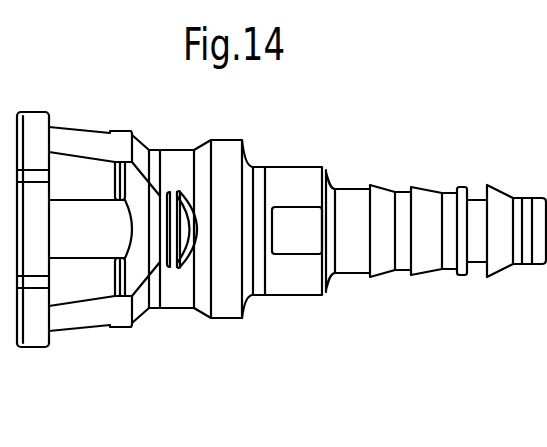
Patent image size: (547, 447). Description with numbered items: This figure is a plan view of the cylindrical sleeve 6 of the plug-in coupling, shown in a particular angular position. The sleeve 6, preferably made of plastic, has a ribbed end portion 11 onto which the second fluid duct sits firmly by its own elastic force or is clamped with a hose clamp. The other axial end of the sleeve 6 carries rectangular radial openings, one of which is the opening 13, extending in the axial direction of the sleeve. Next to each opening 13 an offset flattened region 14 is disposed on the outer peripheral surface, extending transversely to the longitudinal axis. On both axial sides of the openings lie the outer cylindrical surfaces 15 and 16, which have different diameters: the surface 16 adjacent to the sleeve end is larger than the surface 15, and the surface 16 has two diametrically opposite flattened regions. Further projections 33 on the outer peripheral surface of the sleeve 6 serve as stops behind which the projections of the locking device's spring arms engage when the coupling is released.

The cylindrical sleeve 6 is at (293, 168).
The ribbed end portion 11 is at (443, 202).
The radial opening 13 is at (77, 250).
The offset flattened region 14 is at (73, 163).
The outer cylindrical surface 15 is at (225, 155).
The outer cylindrical surface 16 is at (33, 123).
The further projection 33 is at (178, 263).